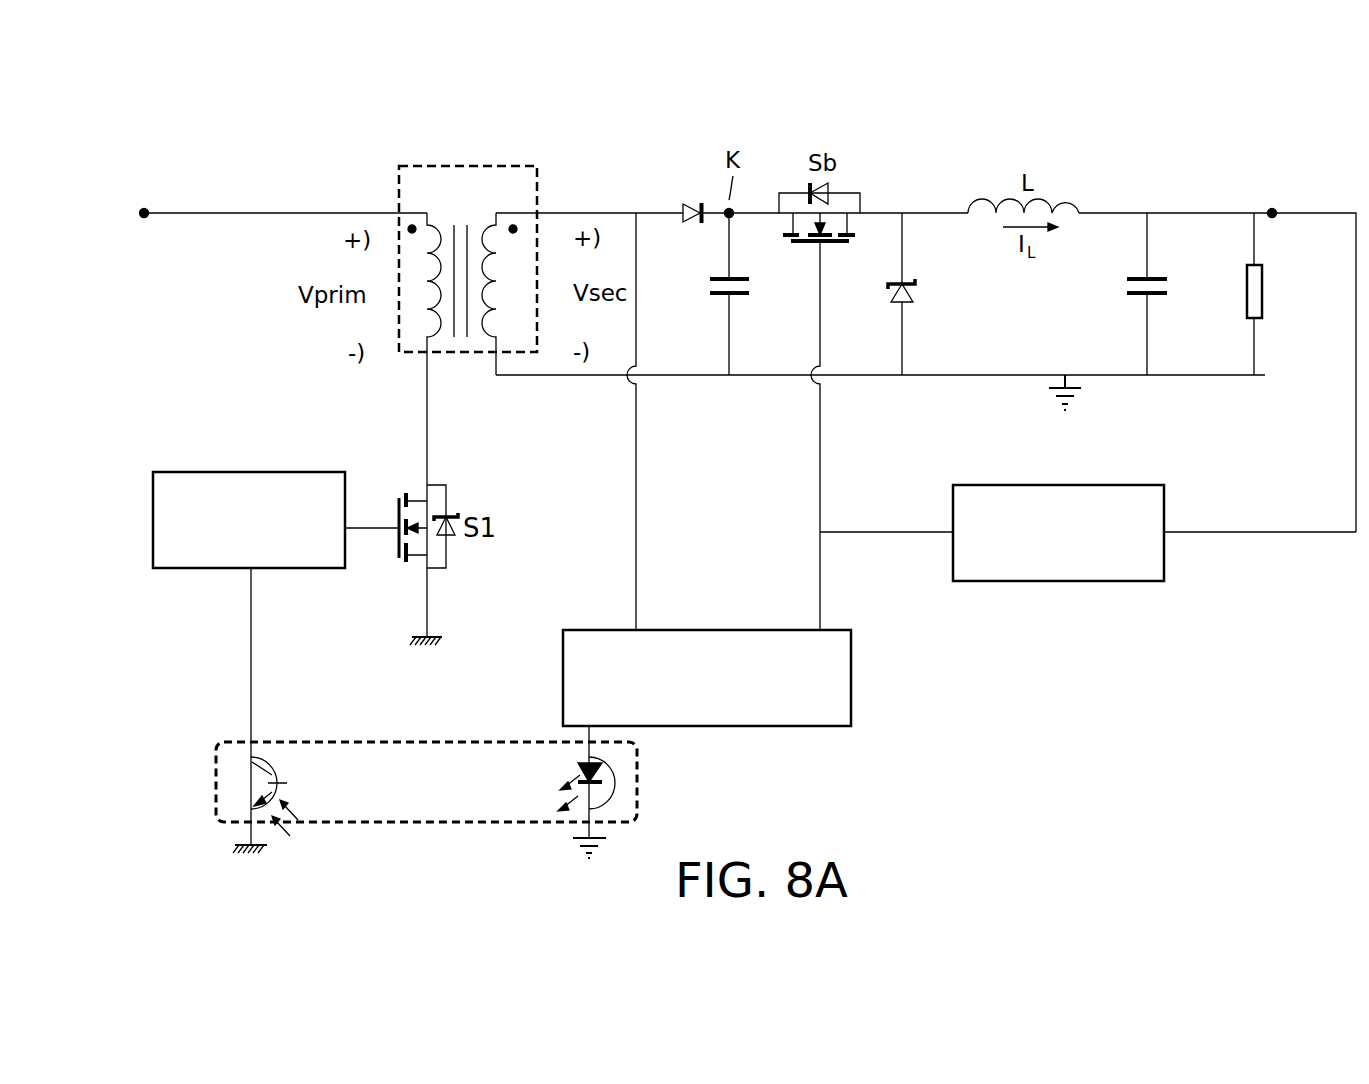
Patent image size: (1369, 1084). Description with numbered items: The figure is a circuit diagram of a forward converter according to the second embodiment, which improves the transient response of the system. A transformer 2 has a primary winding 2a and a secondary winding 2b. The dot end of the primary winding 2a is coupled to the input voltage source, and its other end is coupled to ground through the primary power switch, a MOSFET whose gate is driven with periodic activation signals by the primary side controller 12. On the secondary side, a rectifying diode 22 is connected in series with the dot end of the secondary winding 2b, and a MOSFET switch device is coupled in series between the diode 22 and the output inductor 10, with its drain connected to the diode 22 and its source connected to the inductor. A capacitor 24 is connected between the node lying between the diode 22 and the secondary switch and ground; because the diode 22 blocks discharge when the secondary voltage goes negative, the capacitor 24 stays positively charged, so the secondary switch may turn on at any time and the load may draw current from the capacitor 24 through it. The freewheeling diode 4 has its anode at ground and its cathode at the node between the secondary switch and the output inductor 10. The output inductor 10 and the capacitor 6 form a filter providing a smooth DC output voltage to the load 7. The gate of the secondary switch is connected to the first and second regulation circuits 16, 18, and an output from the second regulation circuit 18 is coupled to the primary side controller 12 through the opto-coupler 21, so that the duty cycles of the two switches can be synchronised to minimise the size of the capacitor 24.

The transformer 2 is at (463, 369).
The primary winding 2a is at (437, 223).
The secondary winding 2b is at (487, 223).
The output inductor 10 is at (188, 215).
The diode 22 is at (692, 202).
The capacitor 24 is at (743, 297).
The freewheeling diode 4 is at (914, 296).
The capacitor 6 is at (1133, 297).
The load 7 is at (1246, 285).
The primary side controller 12 is at (248, 472).
The first regulation circuit 16 is at (1005, 485).
The second regulation circuit 18 is at (563, 677).
The opto-coupler 21 is at (637, 795).